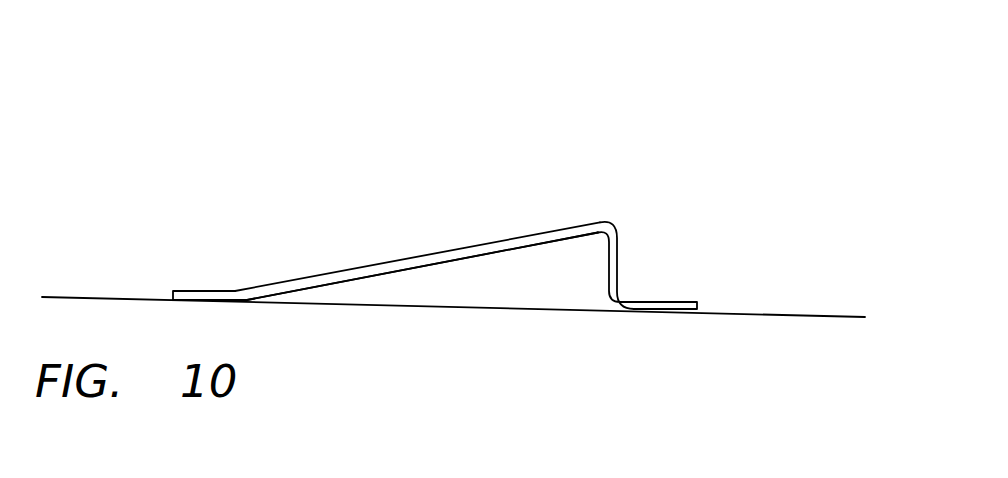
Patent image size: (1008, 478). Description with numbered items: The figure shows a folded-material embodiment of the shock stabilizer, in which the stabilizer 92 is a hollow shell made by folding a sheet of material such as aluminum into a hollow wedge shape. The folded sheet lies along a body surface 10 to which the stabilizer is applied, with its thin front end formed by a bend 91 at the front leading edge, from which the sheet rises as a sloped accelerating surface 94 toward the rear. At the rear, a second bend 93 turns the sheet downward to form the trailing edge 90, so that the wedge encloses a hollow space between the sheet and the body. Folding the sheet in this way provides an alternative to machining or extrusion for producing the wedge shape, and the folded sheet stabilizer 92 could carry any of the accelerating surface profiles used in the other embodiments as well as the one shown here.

The base surface 10 is at (703, 334).
The trailing edge 90 is at (449, 244).
The bend at the front leading edge 91 is at (235, 291).
The folded sheet stabilizer 92 is at (477, 285).
The bend 93 is at (613, 228).
The inclined ramp 94 is at (408, 263).